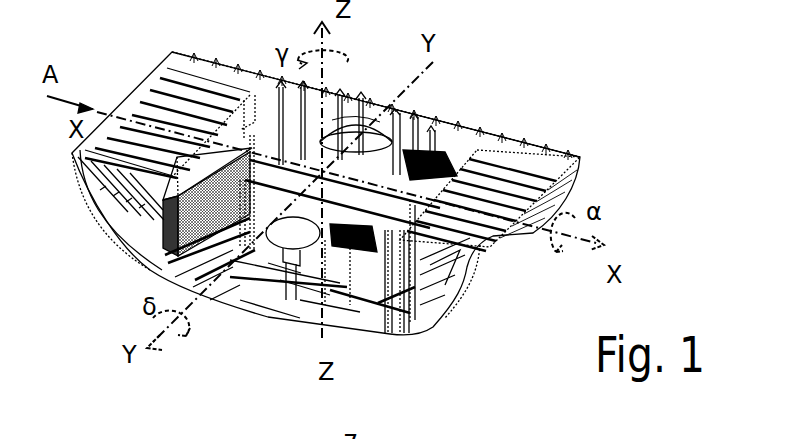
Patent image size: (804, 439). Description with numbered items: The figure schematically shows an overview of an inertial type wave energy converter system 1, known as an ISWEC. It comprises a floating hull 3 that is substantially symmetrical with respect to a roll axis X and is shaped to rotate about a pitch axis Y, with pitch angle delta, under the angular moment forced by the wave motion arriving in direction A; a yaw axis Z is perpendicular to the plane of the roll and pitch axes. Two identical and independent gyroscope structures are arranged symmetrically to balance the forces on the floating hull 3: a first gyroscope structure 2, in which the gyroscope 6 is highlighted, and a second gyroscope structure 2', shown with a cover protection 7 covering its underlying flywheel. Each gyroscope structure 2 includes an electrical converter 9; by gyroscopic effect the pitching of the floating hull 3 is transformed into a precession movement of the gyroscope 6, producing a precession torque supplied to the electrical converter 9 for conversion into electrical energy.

The inertial type WEC system 1 is at (606, 104).
The first gyroscope structure 2 is at (165, 239).
The second gyroscope structure 2' is at (446, 113).
The floating hull 3 is at (156, 66).
The gyroscope 6 is at (281, 262).
The cover protection 7 is at (355, 113).
The electrical converter 9 is at (382, 280).